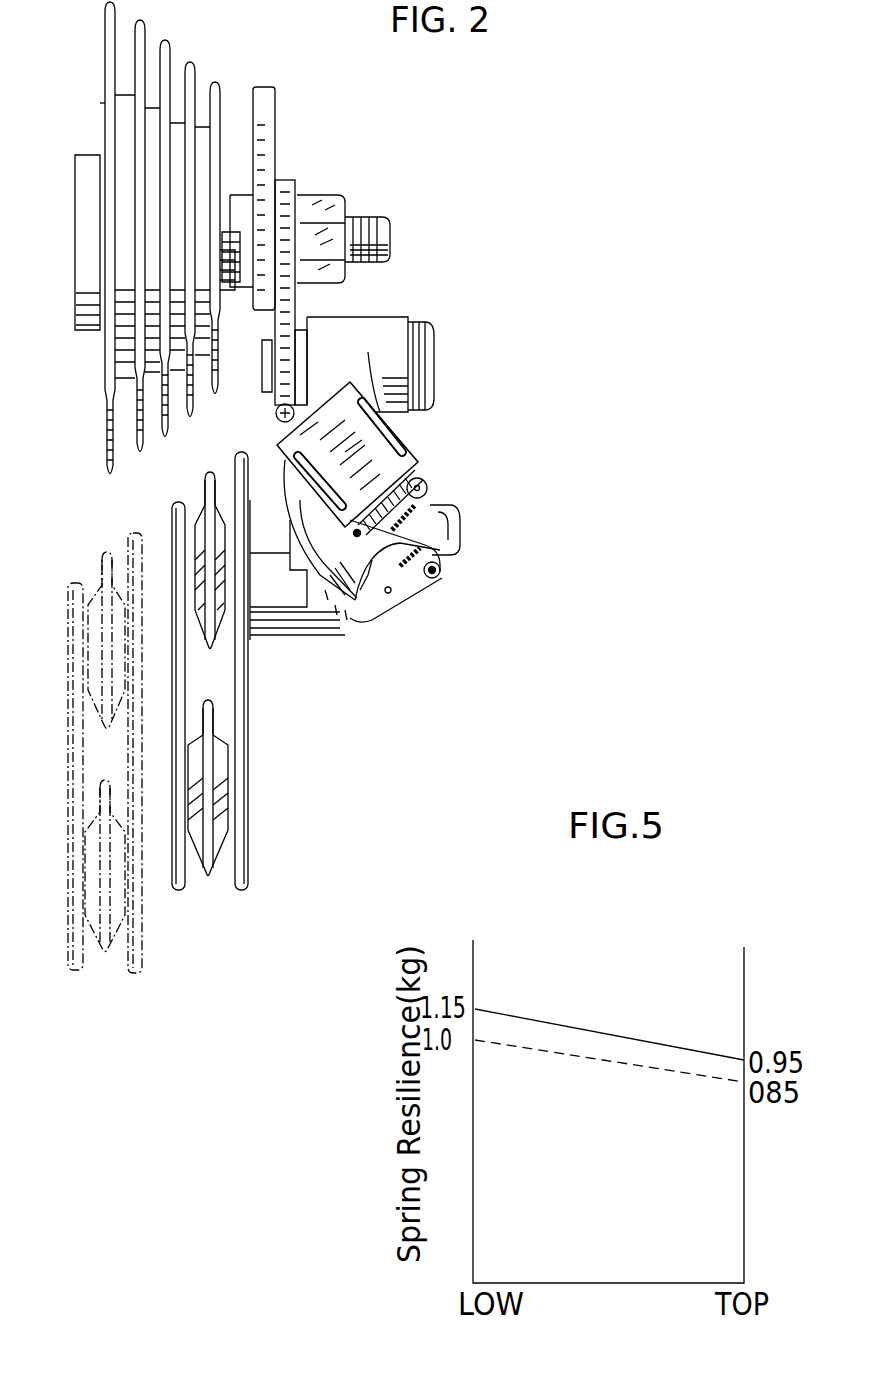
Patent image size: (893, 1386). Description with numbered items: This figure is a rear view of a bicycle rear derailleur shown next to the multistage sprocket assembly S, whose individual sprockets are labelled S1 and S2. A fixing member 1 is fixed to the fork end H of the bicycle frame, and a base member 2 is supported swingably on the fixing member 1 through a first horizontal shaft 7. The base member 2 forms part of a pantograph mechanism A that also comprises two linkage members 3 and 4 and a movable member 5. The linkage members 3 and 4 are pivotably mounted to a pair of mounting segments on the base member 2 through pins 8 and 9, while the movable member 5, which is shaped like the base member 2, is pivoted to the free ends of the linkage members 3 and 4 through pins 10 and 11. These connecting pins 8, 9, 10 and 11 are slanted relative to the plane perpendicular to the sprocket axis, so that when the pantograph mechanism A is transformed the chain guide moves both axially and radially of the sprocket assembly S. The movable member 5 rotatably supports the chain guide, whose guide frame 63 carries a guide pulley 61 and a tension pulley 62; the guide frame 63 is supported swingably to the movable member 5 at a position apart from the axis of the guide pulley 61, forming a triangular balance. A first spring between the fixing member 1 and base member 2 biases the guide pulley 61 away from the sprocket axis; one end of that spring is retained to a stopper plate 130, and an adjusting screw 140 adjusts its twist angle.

The sprocket assembly S is at (98, 378).
The top (smallest) sprocket S1 is at (218, 372).
The low (largest) sprocket S2 is at (103, 455).
The fork end H is at (262, 132).
The fixing member 1 is at (298, 307).
The base member 2 is at (405, 318).
The stopper plate 130 is at (295, 338).
The adjusting screw 140 is at (276, 414).
The first horizontal shaft 7 is at (432, 359).
The pantograph mechanism A is at (410, 433).
The linkage member 3 is at (405, 452).
The pin 8 is at (422, 490).
The pin 9 is at (362, 535).
The pin 10 is at (433, 574).
The pin 11 is at (390, 593).
The movable member 5 is at (343, 628).
The linkage member 4 is at (297, 476).
The guide pulley 61 is at (218, 518).
The tension pulley 62 is at (217, 833).
The guide frame 63 is at (250, 776).